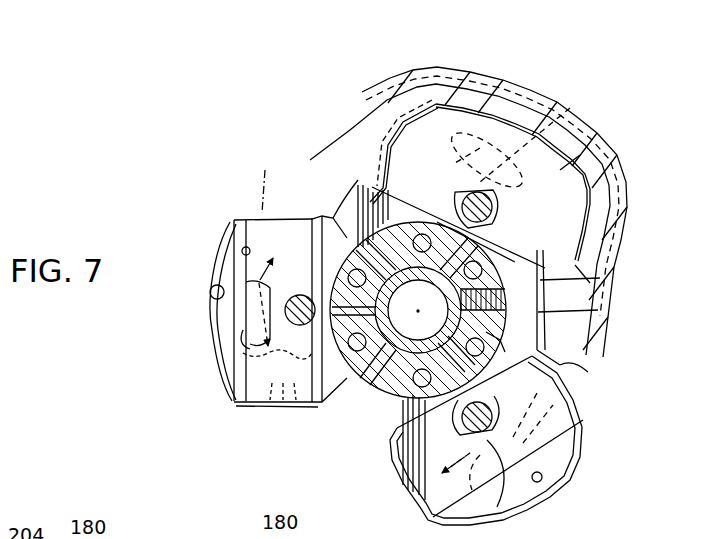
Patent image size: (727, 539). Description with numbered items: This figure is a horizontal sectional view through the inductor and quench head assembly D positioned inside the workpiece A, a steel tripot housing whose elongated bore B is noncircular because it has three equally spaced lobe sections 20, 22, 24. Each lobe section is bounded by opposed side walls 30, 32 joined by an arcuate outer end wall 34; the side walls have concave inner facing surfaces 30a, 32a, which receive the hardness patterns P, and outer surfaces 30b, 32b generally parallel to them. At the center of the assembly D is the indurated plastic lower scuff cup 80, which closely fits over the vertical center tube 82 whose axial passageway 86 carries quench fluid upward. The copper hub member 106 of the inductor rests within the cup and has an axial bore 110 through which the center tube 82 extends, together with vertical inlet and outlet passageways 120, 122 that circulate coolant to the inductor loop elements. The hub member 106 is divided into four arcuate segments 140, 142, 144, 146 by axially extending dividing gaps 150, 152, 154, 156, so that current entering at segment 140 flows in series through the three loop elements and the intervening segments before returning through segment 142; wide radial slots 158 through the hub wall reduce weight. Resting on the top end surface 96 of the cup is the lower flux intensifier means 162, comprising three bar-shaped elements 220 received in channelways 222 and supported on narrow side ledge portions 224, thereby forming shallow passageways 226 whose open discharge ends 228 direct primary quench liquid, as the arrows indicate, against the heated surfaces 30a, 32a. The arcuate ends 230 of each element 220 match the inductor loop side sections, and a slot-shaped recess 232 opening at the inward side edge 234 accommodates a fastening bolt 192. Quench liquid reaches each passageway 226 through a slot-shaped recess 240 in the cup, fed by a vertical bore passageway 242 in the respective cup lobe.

The lobe section 20 is at (209, 296).
The lobe section 22 is at (496, 116).
The lobe section 24 is at (545, 482).
The side wall 30 is at (362, 92).
The inner facing surface 30a is at (350, 129).
The outer surface 30b is at (383, 82).
The side wall 32 is at (610, 250).
The inner facing surface 32a is at (625, 281).
The outer surface 32b is at (624, 240).
The arcuate outer end wall 34 is at (515, 98).
The lower scuff cup 80 is at (342, 458).
The center tube 82 is at (488, 302).
The axial passageway 86 is at (485, 343).
The flat upper end surface 96 is at (346, 402).
The hub member 106 is at (350, 225).
The axial bore 110 is at (404, 293).
The inlet passageway 120 is at (320, 219).
The outlet passageway 122 is at (296, 405).
The hub segment 140 is at (505, 258).
The hub segment 142 is at (490, 378).
The hub segment 144 is at (441, 210).
The hub segment 146 is at (398, 462).
The dividing gap 150 is at (537, 303).
The dividing gap 152 is at (492, 212).
The dividing gap 154 is at (335, 298).
The dividing gap 156 is at (420, 425).
The radial slot 158 is at (558, 338).
The lower flux intensifier means 162 is at (232, 400).
The fastening bolt 192 is at (515, 507).
The bar-shaped element 220 is at (255, 370).
The channelway 222 is at (225, 353).
The side ledge portion 224 is at (235, 238).
The transverse shallow passageway 226 is at (245, 252).
The discharge end 228 is at (250, 218).
The end of intensifier element 230 is at (598, 203).
The slot-shaped recess 232 is at (470, 190).
The inward side edge 234 is at (590, 283).
The slot-shaped recess 240 is at (265, 290).
The bore passageway 242 is at (250, 342).
The workpiece A is at (545, 95).
The elongated bore B is at (366, 212).
The inductor and quench head assembly D is at (605, 325).
The hardness pattern P is at (372, 112).